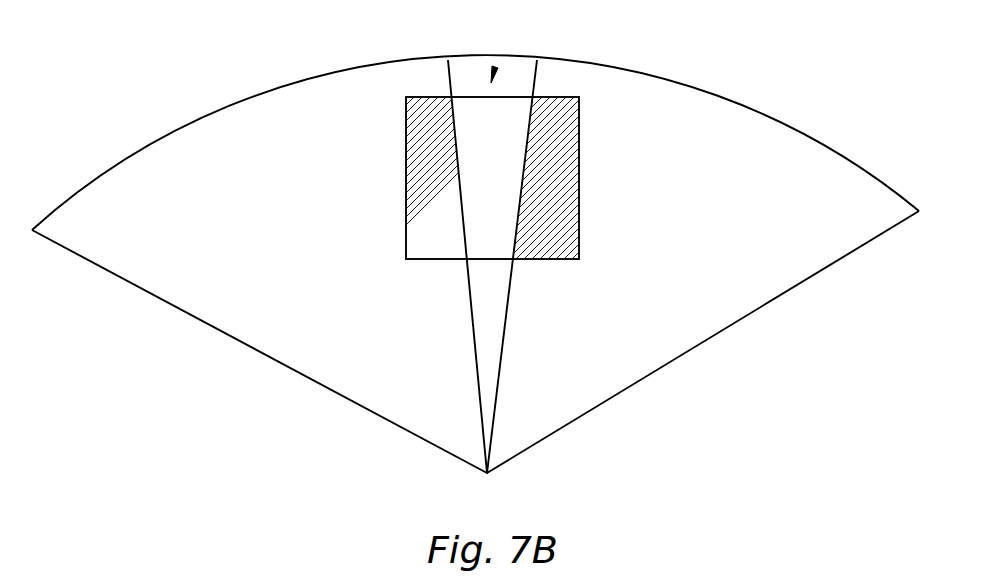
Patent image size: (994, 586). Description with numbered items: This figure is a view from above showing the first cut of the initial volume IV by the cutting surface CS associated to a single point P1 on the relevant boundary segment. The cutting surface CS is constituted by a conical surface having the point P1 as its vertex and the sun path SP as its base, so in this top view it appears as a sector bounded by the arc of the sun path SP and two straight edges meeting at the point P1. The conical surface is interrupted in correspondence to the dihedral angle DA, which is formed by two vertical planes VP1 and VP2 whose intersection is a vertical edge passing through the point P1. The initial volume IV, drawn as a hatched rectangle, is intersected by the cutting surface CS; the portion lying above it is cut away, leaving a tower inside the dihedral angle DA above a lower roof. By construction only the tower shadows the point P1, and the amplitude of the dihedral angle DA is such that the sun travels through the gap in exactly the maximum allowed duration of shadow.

The sun path SP is at (680, 82).
The cutting surface CS is at (693, 323).
The point P1 is at (487, 473).
The vertical plane VP1 is at (472, 323).
The vertical plane VP2 is at (505, 360).
The initial volume IV is at (406, 143).
The dihedral angle DA is at (497, 57).